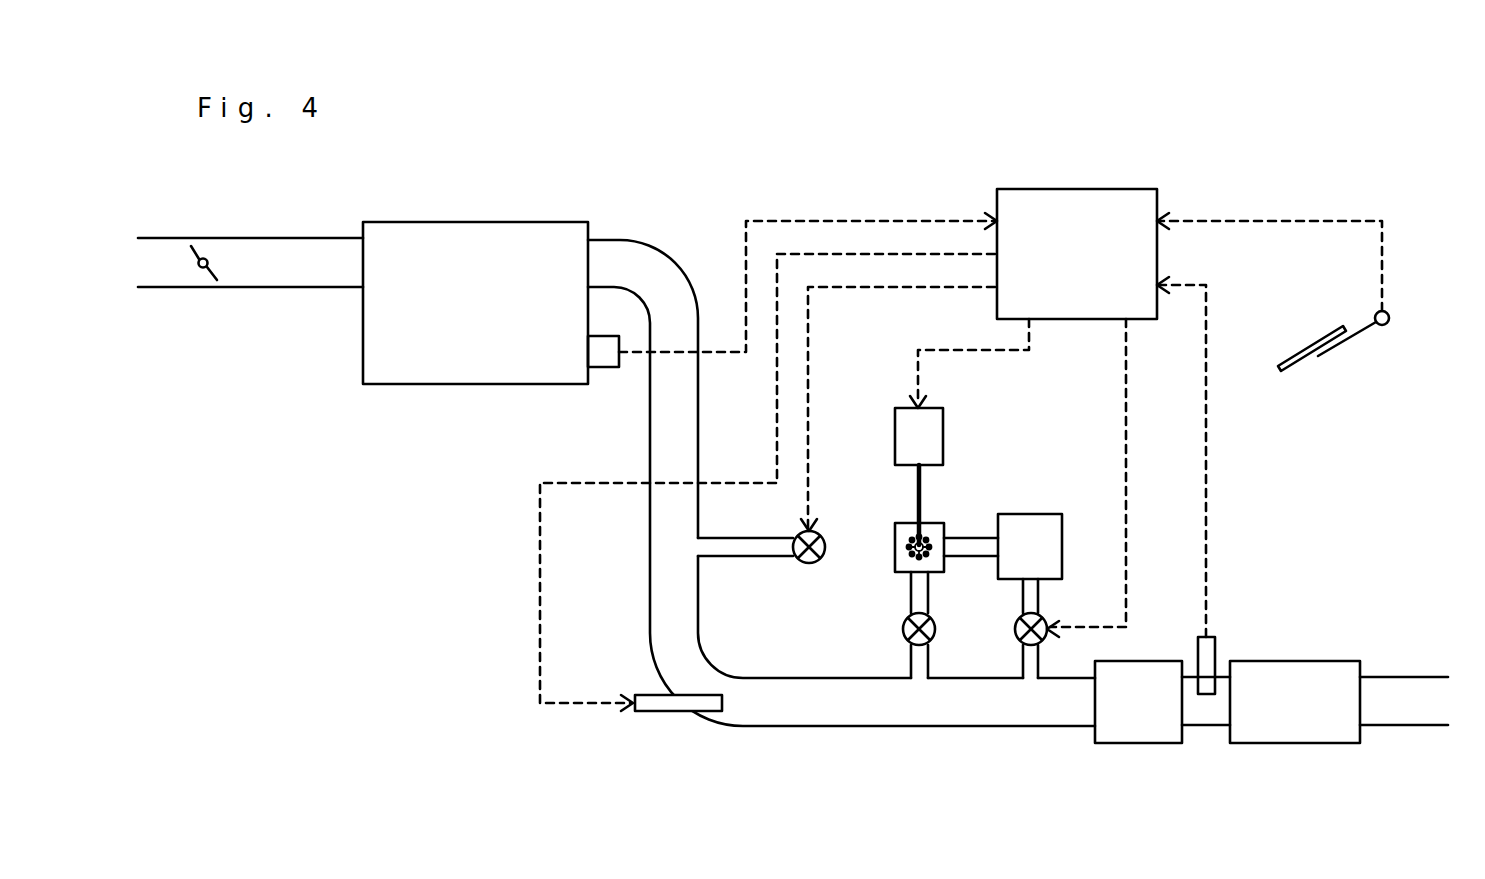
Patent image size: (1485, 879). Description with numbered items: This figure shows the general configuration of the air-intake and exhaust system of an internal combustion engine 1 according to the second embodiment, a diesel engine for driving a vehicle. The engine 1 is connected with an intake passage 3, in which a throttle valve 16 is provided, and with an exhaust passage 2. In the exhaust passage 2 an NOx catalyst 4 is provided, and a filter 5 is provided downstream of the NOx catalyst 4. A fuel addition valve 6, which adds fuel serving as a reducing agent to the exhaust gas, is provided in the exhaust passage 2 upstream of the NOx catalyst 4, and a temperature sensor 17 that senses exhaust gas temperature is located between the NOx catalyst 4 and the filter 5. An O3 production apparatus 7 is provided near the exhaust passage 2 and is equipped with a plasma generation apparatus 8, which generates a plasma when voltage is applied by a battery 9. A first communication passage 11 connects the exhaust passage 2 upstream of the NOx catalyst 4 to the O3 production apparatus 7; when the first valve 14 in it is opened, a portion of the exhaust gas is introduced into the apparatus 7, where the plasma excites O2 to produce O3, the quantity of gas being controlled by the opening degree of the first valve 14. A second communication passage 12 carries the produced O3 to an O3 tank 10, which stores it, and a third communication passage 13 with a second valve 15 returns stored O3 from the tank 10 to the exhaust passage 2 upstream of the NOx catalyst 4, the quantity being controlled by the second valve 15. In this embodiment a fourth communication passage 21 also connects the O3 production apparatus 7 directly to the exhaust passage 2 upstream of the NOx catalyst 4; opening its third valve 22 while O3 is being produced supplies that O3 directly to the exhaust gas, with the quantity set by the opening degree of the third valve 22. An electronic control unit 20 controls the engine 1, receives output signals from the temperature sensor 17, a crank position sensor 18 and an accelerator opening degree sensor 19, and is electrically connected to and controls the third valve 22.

The internal combustion engine 1 is at (492, 384).
The exhaust passage 2 is at (648, 595).
The intake passage 3 is at (315, 287).
The NOx catalyst 4 is at (1133, 743).
The filter 5 is at (1295, 743).
The fuel addition valve 6 is at (675, 711).
The O3 production apparatus 7 is at (895, 528).
The plasma generation apparatus 8 is at (928, 538).
The battery 9 is at (896, 435).
The O3 tank 10 is at (1032, 514).
The first communication passage 11 is at (770, 556).
The second communication passage 12 is at (973, 536).
The third communication passage 13 is at (1042, 600).
The first valve 14 is at (818, 532).
The second valve 15 is at (1015, 630).
The throttle valve 16 is at (198, 267).
The temperature sensor 17 is at (1215, 652).
The crank position sensor 18 is at (603, 368).
The accelerator opening degree sensor 19 is at (1382, 325).
The electronic control unit (ECU) 20 is at (1077, 189).
The fourth communication passage 21 is at (910, 602).
The third valve 22 is at (903, 628).